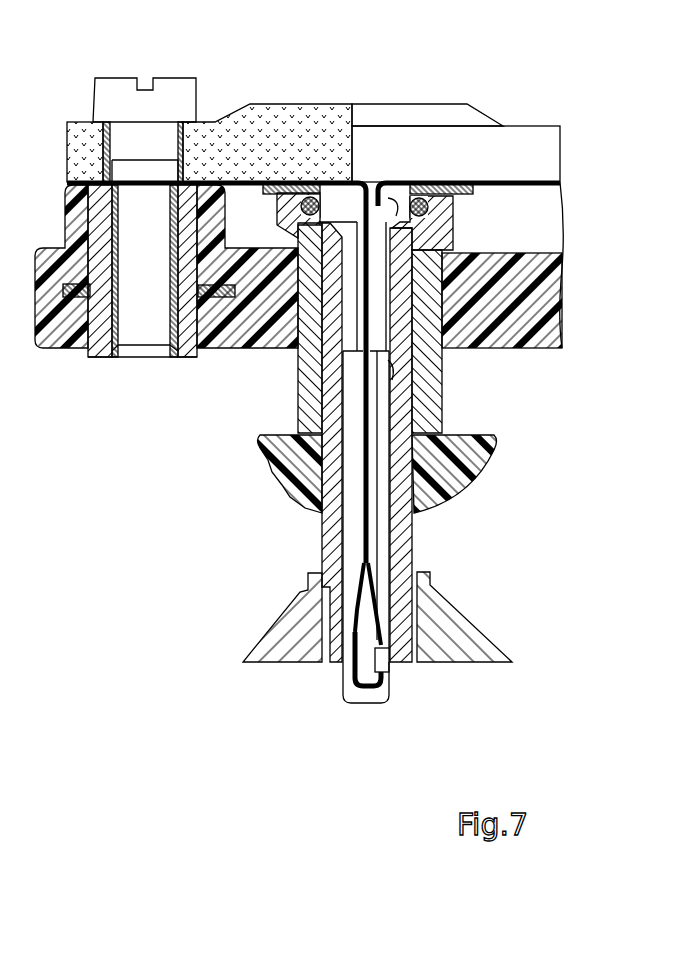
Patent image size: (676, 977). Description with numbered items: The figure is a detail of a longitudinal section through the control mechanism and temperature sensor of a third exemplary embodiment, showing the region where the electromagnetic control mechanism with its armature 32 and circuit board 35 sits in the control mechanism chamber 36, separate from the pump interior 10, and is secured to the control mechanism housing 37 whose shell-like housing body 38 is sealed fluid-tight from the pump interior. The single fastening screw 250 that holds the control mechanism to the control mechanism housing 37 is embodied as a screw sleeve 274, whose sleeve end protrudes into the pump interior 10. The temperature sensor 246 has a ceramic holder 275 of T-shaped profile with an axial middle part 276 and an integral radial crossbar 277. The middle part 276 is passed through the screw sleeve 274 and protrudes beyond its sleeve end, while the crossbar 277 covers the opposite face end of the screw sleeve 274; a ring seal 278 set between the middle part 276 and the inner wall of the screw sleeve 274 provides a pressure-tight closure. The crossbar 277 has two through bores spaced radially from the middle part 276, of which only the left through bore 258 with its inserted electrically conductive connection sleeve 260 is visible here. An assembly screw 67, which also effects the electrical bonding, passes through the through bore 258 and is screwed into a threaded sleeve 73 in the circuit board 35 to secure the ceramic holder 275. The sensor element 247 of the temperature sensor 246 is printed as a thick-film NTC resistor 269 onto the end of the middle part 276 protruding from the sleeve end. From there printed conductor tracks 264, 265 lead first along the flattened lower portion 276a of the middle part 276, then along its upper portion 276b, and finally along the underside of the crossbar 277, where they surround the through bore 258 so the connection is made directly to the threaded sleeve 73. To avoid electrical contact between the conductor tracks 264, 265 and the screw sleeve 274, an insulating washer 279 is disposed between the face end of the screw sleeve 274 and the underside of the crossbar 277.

The pump interior 10 is at (378, 753).
The armature 32 is at (450, 460).
The circuit board 35 is at (522, 298).
The control mechanism chamber 36 is at (530, 417).
The control mechanism housing 37 is at (488, 670).
The housing body 38 is at (427, 618).
The assembly screw 67 is at (127, 100).
The threaded sleeve 73 is at (105, 327).
The temperature sensor 246 is at (412, 105).
The sensor element 247 is at (392, 677).
The fastening screw 250 is at (412, 528).
The through bore 258 is at (178, 145).
The connection sleeve 260 is at (107, 140).
The printed conductor track 264 is at (440, 182).
The printed conductor track 265 is at (250, 182).
The thick-film NTC resistor 269 is at (389, 658).
The screw sleeve 274 is at (393, 393).
The ceramic holder 275 is at (512, 150).
The middle part 276 is at (453, 229).
The flattened lower portion 276a is at (378, 490).
The upper portion 276b is at (395, 366).
The crossbar 277 is at (238, 130).
The ring seal 278 is at (455, 210).
The insulating washer 279 is at (298, 182).